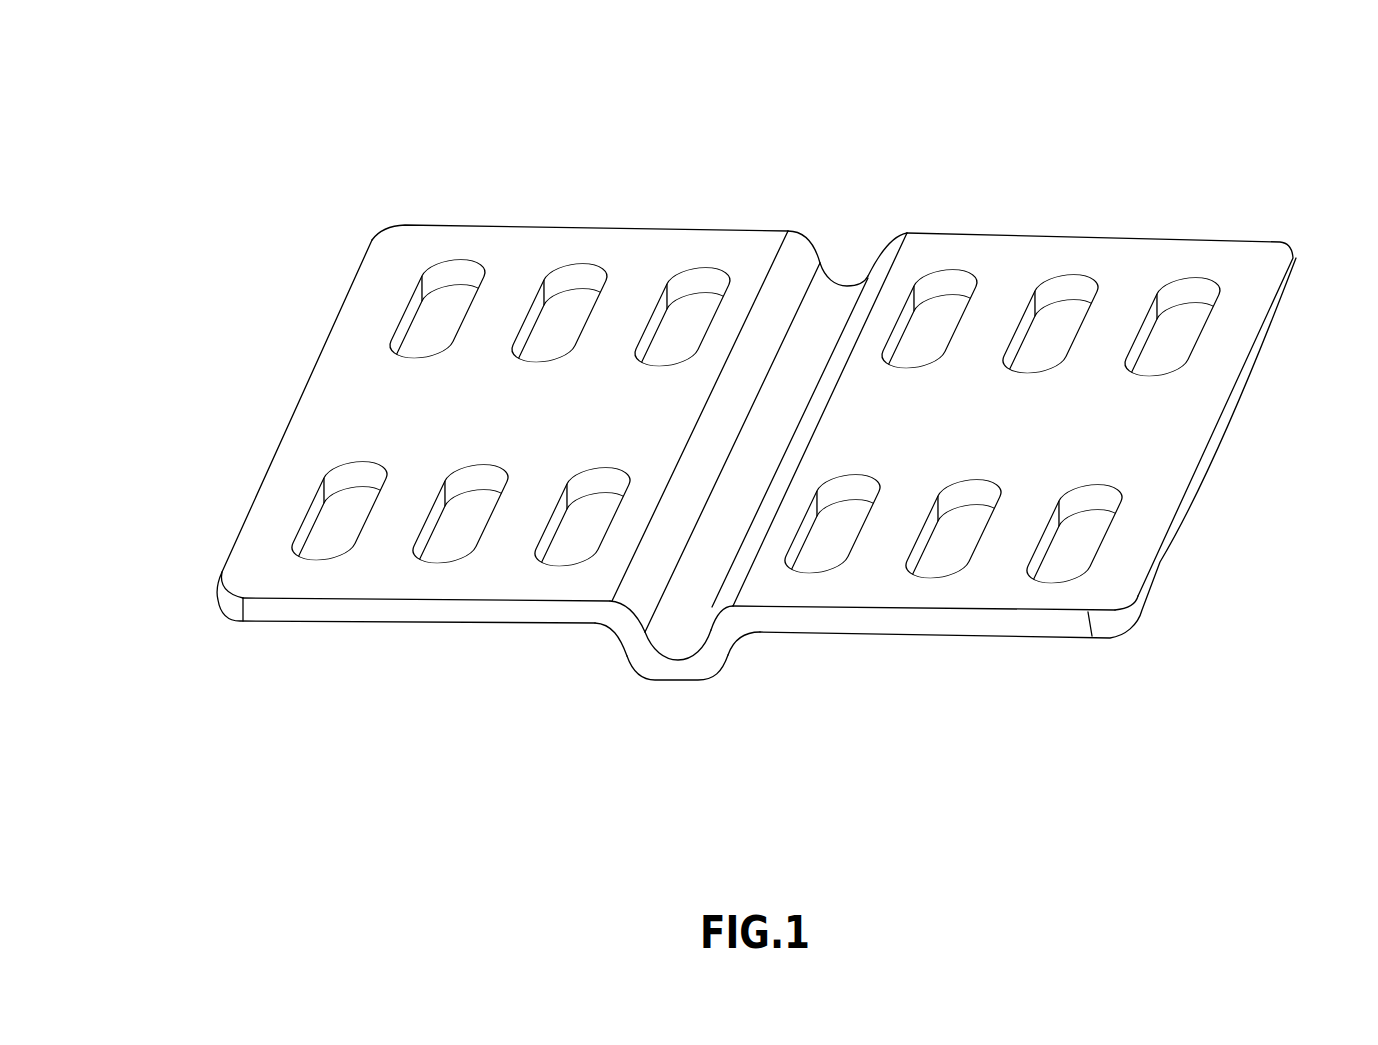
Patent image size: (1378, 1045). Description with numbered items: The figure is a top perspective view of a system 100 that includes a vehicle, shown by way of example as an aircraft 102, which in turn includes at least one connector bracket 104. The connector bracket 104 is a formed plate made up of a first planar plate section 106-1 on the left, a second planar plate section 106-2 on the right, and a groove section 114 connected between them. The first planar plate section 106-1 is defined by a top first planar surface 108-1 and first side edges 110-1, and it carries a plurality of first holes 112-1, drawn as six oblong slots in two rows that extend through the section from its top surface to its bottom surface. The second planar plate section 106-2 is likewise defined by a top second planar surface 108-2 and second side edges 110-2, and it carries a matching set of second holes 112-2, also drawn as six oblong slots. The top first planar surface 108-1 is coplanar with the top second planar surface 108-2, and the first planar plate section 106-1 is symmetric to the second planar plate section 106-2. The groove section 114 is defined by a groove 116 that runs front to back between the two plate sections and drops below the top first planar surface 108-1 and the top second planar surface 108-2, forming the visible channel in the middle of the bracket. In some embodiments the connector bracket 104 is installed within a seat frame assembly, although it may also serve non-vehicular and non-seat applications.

The system 100 is at (447, 67).
The aircraft 102 is at (532, 125).
The connector bracket 104 is at (642, 165).
The first planar plate section 106-1 is at (333, 390).
The second planar plate section 106-2 is at (1140, 262).
The top first planar surface 108-1 is at (385, 545).
The top second planar surface 108-2 is at (1127, 422).
The first side edges 110-1 is at (357, 280).
The second side edges 110-2 is at (970, 236).
The first holes 112-1 is at (462, 270).
The second holes 112-2 is at (1197, 283).
The groove section 114 is at (718, 663).
The groove 116 is at (678, 640).